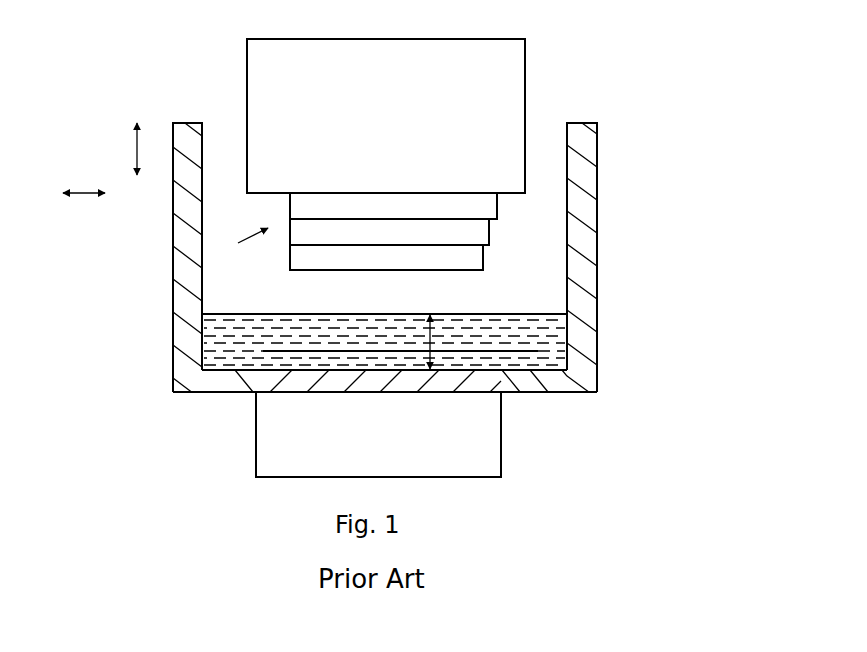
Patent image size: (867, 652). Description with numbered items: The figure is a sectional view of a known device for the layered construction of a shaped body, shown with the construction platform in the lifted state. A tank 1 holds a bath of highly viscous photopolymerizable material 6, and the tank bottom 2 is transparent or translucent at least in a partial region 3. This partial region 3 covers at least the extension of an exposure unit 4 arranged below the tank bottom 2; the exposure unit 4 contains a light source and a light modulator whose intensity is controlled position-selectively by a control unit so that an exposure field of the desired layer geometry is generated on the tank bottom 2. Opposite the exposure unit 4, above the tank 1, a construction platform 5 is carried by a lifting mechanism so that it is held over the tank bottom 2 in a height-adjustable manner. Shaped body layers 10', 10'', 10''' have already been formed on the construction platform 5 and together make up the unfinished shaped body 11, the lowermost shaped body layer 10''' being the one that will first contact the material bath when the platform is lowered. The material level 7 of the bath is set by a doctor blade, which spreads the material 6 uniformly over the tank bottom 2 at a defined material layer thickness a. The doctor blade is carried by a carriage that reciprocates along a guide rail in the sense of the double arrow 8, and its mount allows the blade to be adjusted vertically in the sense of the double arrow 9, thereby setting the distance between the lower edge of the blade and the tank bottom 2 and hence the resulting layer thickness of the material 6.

The tank 1 is at (583, 240).
The tank bottom 2 is at (545, 370).
The partial region 3 is at (305, 380).
The exposure unit 4 is at (501, 422).
The construction platform 5 is at (525, 65).
The highly viscous material 6 is at (228, 342).
The material level 7 is at (228, 313).
The double arrow 8 is at (84, 207).
The double arrow 9 is at (126, 149).
The shaped body layer 10' is at (419, 205).
The shaped body layer 10'' is at (421, 232).
The lowermost shaped body layer 10''' is at (424, 260).
The unfinished shaped body 11 is at (241, 246).